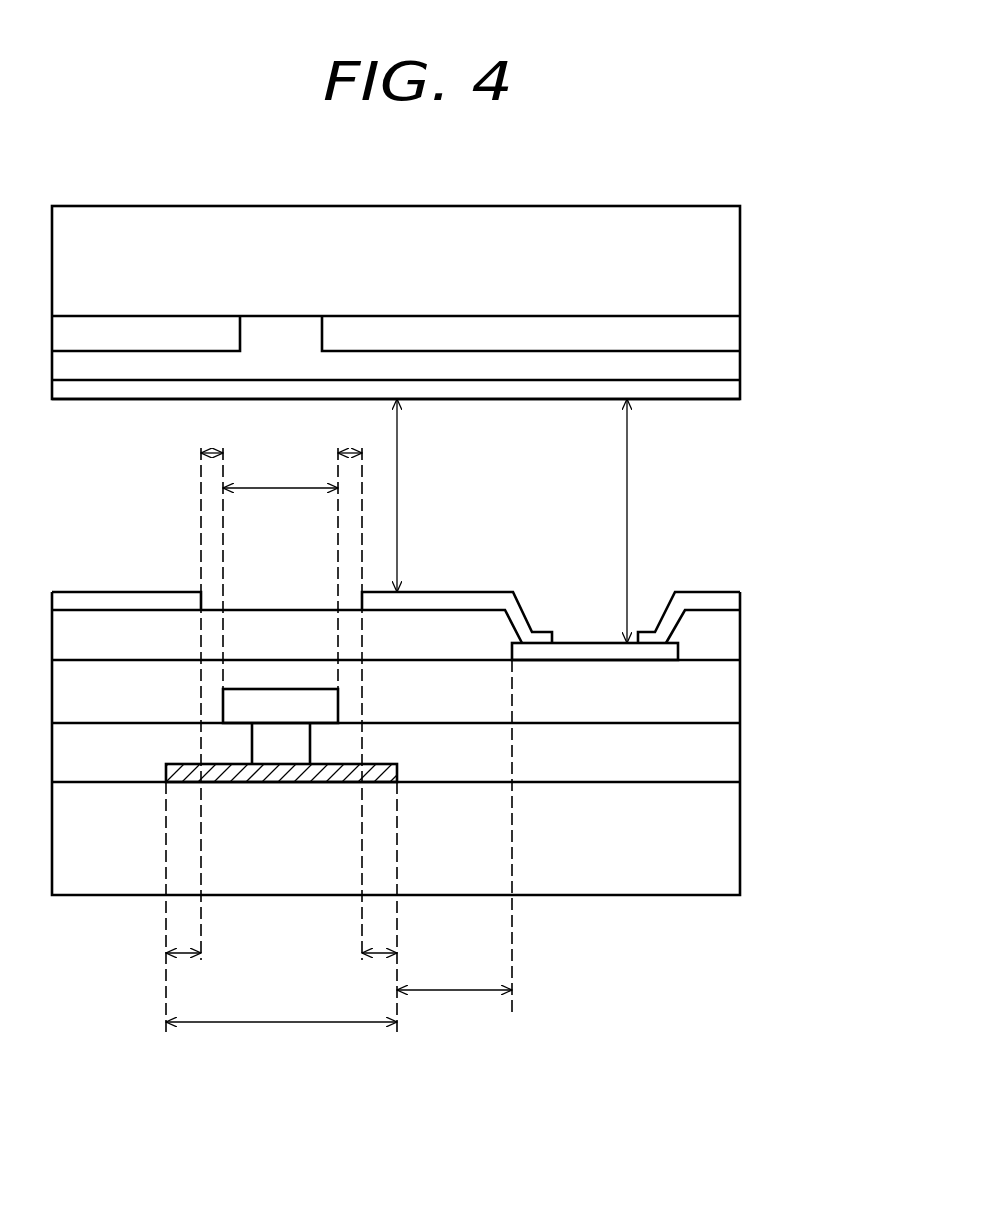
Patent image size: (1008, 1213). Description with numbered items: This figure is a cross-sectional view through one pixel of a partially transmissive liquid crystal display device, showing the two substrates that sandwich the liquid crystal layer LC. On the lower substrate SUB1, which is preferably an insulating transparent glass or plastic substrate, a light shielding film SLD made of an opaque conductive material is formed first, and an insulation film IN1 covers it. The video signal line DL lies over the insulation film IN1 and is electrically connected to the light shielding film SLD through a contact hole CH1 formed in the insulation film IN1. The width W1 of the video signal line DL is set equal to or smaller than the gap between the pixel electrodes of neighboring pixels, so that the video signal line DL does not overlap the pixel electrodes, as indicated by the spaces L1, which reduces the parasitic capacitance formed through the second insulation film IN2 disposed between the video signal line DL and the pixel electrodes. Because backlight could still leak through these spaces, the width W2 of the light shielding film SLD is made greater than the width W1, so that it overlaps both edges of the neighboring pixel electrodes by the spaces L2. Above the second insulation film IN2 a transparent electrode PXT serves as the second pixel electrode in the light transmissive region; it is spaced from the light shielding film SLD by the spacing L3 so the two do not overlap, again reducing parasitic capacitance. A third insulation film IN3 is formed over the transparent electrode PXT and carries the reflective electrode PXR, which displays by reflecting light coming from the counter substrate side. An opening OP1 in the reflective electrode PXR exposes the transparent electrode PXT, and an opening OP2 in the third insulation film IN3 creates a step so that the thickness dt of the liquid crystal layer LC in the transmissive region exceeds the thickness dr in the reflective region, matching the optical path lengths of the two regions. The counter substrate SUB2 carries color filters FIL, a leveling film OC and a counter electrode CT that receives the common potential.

The color filter FIL is at (118, 316).
The leveling film OC is at (273, 355).
The counter substrate SUB2 is at (740, 258).
The counter electrode CT is at (103, 400).
The space L1 is at (282, 431).
The width of the video signal line W1 is at (280, 470).
The thickness of the liquid crystal layer in the light reflective region dr is at (410, 495).
The thickness of the liquid crystal layer in the light transmissive region dt is at (644, 521).
The liquid crystal layer LC is at (725, 507).
The third insulation film IN3 is at (420, 625).
The reflective electrode PXR is at (115, 592).
The video signal line DL is at (268, 689).
The opening OP2 is at (522, 638).
The opening OP1 is at (555, 641).
The transparent electrode PXT is at (590, 641).
The second insulation film IN2 is at (740, 690).
The insulation film IN1 is at (740, 755).
The substrate SUB1 is at (740, 830).
The space L2 is at (281, 934).
The light shielding film SLD is at (222, 782).
The contact hole CH1 is at (287, 752).
The spacing L3 is at (454, 975).
The width of the light shielding film W2 is at (281, 1004).